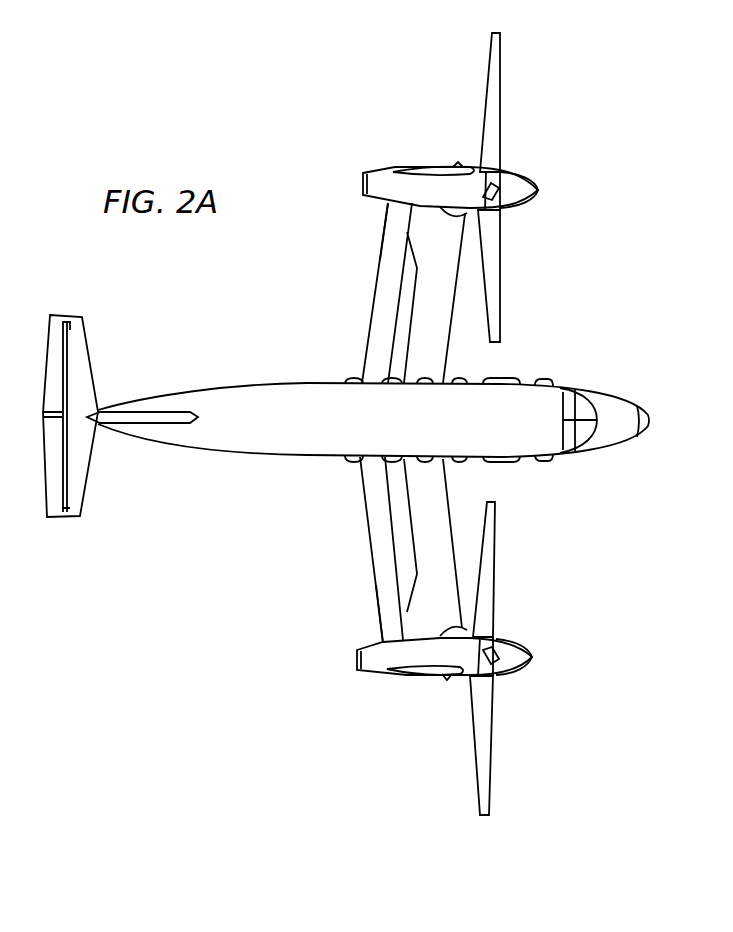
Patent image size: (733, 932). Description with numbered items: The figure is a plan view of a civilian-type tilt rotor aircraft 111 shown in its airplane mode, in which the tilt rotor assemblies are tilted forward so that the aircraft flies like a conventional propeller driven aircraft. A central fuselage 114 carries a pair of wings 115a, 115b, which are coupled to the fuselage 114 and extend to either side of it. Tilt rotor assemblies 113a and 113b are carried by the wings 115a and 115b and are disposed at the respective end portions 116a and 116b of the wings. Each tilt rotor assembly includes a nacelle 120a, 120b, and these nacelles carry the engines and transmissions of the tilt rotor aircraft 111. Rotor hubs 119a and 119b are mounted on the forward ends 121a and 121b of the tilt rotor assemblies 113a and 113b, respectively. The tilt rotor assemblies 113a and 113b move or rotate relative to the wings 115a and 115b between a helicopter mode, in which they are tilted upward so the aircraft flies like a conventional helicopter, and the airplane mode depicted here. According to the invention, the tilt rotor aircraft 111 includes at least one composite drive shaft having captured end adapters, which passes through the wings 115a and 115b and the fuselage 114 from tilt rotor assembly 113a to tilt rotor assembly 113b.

The tilt rotor aircraft 111 is at (210, 335).
The tilt rotor assembly 113a is at (380, 147).
The tilt rotor assembly 113b is at (368, 695).
The fuselage 114 is at (265, 453).
The wing 115a is at (377, 285).
The wing 115b is at (375, 557).
The end portion of wing 116a is at (378, 208).
The end portion of wing 116b is at (375, 633).
The rotor hub 119a is at (523, 176).
The rotor hub 119b is at (518, 672).
The nacelle 120a is at (375, 171).
The nacelle 120b is at (375, 675).
The forward end of tilt rotor assembly 121a is at (502, 220).
The forward end of tilt rotor assembly 121b is at (498, 627).